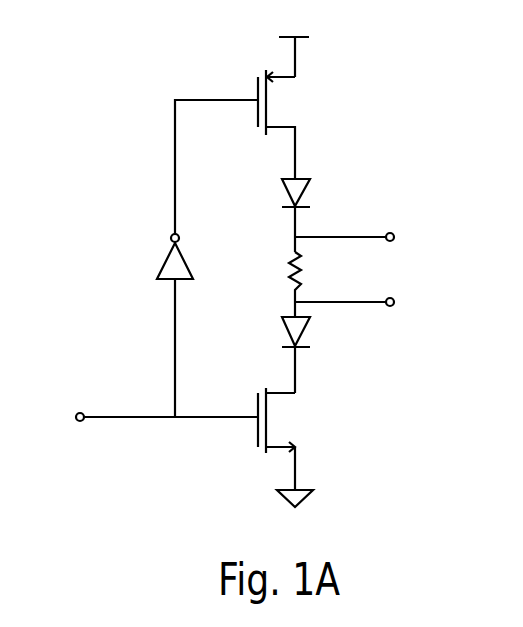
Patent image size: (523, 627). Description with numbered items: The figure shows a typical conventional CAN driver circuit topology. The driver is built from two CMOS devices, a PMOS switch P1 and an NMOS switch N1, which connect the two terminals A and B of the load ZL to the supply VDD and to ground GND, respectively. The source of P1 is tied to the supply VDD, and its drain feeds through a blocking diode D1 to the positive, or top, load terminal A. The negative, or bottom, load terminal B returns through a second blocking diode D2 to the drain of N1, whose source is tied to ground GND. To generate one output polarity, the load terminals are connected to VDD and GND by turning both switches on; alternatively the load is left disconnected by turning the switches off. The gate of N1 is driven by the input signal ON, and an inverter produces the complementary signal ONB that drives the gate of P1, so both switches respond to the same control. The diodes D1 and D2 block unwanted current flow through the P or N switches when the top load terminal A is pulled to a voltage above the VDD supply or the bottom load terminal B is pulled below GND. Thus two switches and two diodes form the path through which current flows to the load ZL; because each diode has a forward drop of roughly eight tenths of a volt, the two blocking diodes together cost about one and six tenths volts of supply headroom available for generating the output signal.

The supply VDD is at (294, 39).
The PMOS switch P1 is at (295, 124).
The inverted enable signal node ONB is at (216, 150).
The enable input signal ON is at (147, 417).
The diode D1 is at (313, 214).
The terminal A is at (356, 238).
The load ZL is at (317, 284).
The terminal B is at (356, 303).
The diode D2 is at (313, 355).
The NMOS switch N1 is at (290, 439).
The ground GND is at (324, 499).